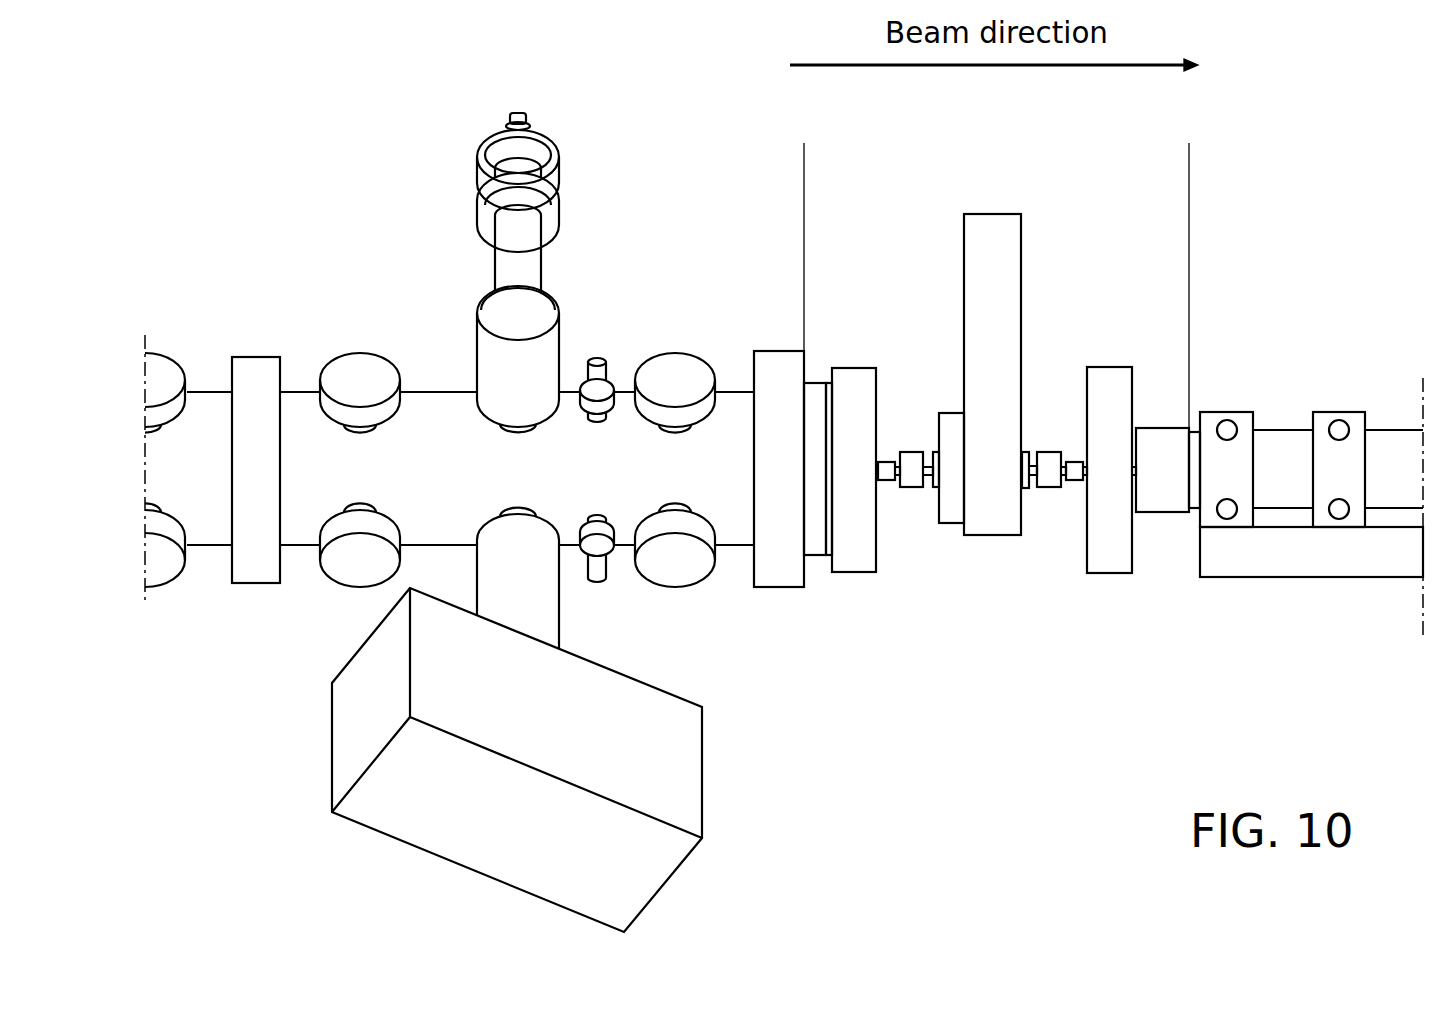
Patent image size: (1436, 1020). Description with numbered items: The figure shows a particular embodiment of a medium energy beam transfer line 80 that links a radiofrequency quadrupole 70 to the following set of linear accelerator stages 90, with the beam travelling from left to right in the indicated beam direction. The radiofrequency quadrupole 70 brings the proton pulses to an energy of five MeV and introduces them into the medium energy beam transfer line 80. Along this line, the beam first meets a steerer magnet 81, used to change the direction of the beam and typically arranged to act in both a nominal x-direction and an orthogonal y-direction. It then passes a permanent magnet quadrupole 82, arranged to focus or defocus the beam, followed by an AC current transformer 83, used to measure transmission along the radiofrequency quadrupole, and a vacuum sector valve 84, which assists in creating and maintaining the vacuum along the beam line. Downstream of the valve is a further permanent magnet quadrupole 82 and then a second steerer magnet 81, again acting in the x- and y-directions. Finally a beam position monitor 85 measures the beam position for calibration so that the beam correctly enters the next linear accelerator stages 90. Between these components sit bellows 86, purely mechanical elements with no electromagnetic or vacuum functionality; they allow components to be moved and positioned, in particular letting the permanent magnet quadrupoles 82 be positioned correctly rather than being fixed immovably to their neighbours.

The radiofrequency quadrupole 70 is at (606, 158).
The medium energy beam transfer line 80 is at (816, 205).
The linear accelerator stages 90 is at (1393, 158).
The steerer magnet 81 is at (860, 580).
The permanent magnet quadrupole 82 is at (916, 446).
The AC current transformer 83 is at (955, 406).
The vacuum sector valve 84 is at (986, 545).
The beam position monitor 85 is at (1163, 520).
The bellows 86 is at (888, 487).